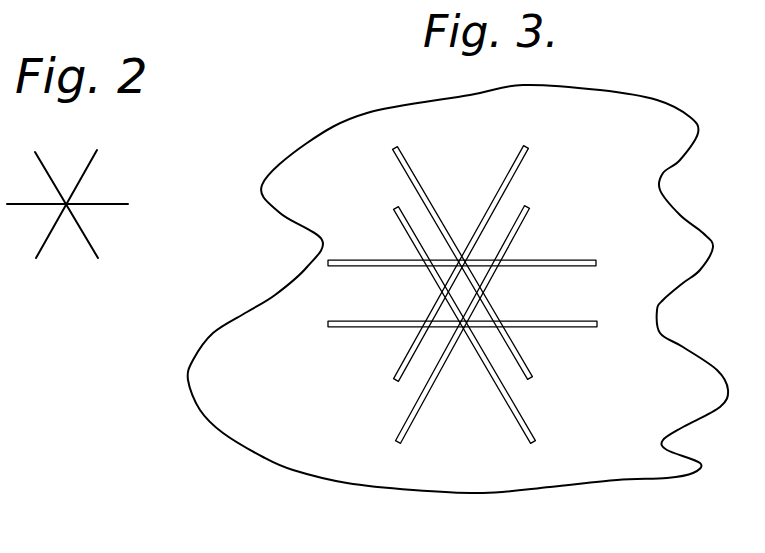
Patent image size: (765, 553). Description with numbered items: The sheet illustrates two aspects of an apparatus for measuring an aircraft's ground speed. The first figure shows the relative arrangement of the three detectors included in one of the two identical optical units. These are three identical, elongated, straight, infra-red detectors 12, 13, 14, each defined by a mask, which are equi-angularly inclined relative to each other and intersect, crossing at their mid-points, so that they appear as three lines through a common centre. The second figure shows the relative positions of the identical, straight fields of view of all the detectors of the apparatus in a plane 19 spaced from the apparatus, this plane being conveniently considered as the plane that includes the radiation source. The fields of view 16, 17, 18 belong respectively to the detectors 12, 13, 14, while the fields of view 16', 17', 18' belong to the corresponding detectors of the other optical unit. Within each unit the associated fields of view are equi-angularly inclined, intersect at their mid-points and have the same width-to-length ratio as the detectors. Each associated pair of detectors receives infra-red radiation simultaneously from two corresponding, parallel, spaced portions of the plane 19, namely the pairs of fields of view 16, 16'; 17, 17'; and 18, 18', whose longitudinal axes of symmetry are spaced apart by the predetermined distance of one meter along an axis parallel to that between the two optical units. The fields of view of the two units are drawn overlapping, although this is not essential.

In FIG. 2, the detector 12 is at (43, 163).
In FIG. 2, the detector 13 is at (87, 168).
In FIG. 2, the detector 14 is at (86, 237).
In FIG. 3, the field of view 16 is at (463, 259).
In FIG. 3, the field of view 16' is at (442, 307).
In FIG. 3, the field of view 17 is at (485, 264).
In FIG. 3, the field of view 17' is at (495, 322).
In FIG. 3, the field of view 18 is at (462, 279).
In FIG. 3, the field of view 18' is at (468, 346).
In FIG. 3, the plane 19 is at (598, 418).